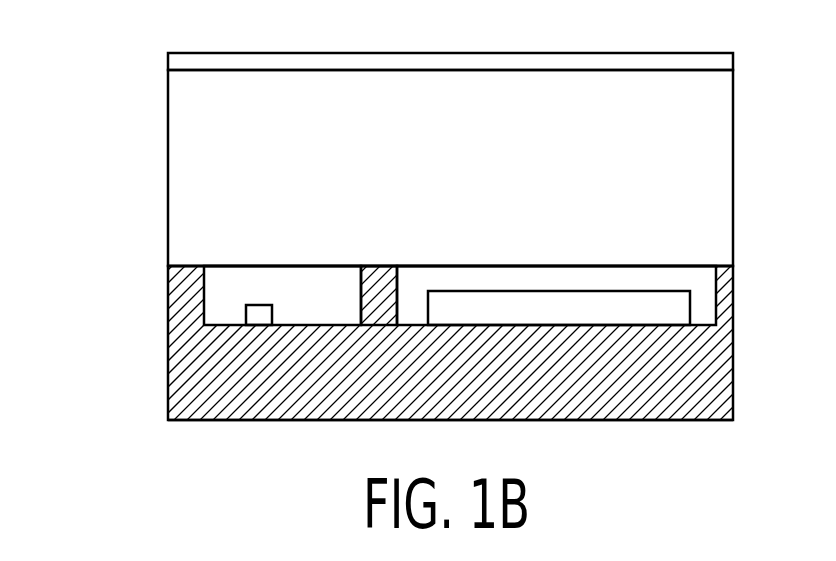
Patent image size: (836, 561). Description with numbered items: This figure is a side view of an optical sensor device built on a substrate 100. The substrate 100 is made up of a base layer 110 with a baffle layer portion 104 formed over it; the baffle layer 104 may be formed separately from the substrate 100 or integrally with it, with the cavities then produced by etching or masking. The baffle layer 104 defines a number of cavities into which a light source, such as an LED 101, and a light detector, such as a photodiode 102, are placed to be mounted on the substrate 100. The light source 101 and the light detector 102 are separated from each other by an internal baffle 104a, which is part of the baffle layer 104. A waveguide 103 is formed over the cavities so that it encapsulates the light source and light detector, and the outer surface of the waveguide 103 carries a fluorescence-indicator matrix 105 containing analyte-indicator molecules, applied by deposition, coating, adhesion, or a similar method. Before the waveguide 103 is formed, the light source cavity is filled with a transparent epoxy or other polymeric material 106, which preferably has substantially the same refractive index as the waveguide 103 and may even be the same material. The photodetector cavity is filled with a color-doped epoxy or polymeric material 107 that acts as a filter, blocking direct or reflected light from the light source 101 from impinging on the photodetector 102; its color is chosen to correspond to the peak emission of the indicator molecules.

The substrate 100 is at (693, 420).
The LED 101 is at (262, 304).
The photodiode 102 is at (672, 288).
The waveguide 103 is at (168, 93).
The baffle layer portion 104 is at (165, 266).
The internal baffle 104a is at (361, 295).
The fluorescence-indicator matrix 105 is at (168, 55).
The transparent epoxy or polymeric material 106 is at (228, 297).
The color-doped epoxy or polymeric material 107 is at (545, 278).
The base layer 110 is at (163, 329).